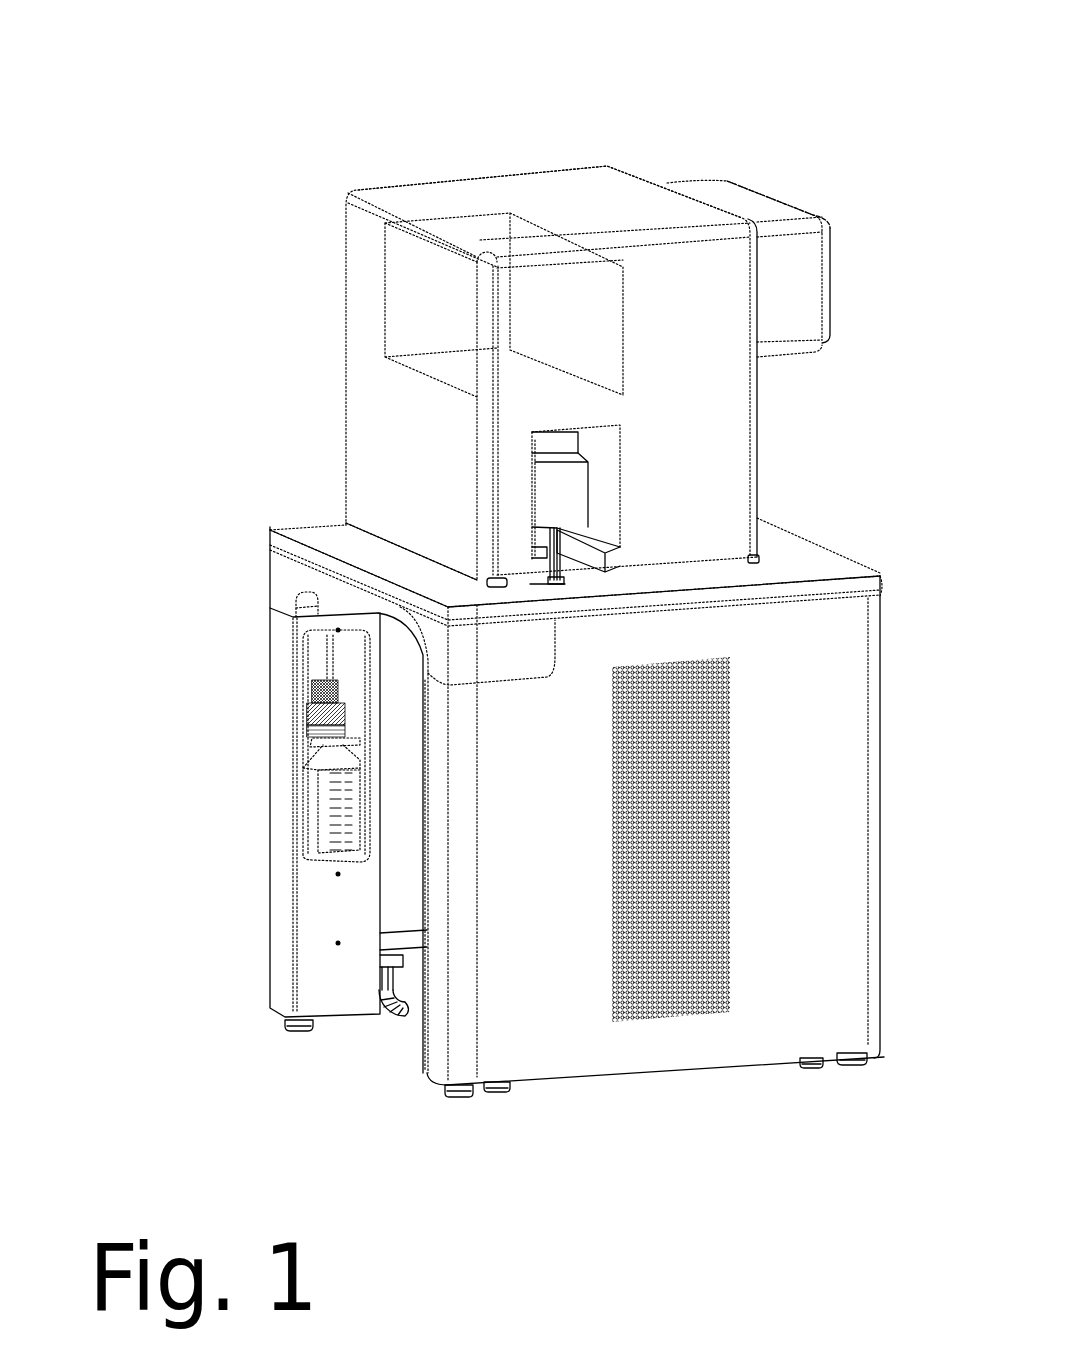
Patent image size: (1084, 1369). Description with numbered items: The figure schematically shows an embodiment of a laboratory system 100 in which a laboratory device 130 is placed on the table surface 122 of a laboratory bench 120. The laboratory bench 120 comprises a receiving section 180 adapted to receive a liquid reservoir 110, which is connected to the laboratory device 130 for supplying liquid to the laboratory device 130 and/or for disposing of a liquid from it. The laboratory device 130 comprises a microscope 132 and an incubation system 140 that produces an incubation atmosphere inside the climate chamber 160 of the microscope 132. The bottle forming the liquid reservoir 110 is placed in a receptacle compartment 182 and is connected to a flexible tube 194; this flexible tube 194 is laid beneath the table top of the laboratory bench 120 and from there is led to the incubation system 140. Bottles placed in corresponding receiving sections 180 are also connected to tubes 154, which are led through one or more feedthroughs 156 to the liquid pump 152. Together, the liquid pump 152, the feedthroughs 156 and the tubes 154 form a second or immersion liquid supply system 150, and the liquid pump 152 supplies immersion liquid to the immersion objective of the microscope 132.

The laboratory system 100 is at (762, 91).
The liquid reservoir 110 is at (322, 838).
The laboratory bench 120 is at (761, 1044).
The table surface 122 is at (815, 565).
The laboratory device 130 is at (722, 458).
The microscope 132 is at (541, 187).
The incubation system 140 is at (785, 298).
The second/immersion liquid supply system 150 is at (167, 435).
The liquid pump 152 is at (545, 479).
The tubes 154 is at (553, 542).
The feedthroughs 156 is at (543, 578).
The climate chamber 160 is at (398, 254).
The receiving section 180 is at (350, 743).
The receptacle compartment 182 is at (357, 682).
The flexible tube 194 is at (327, 647).